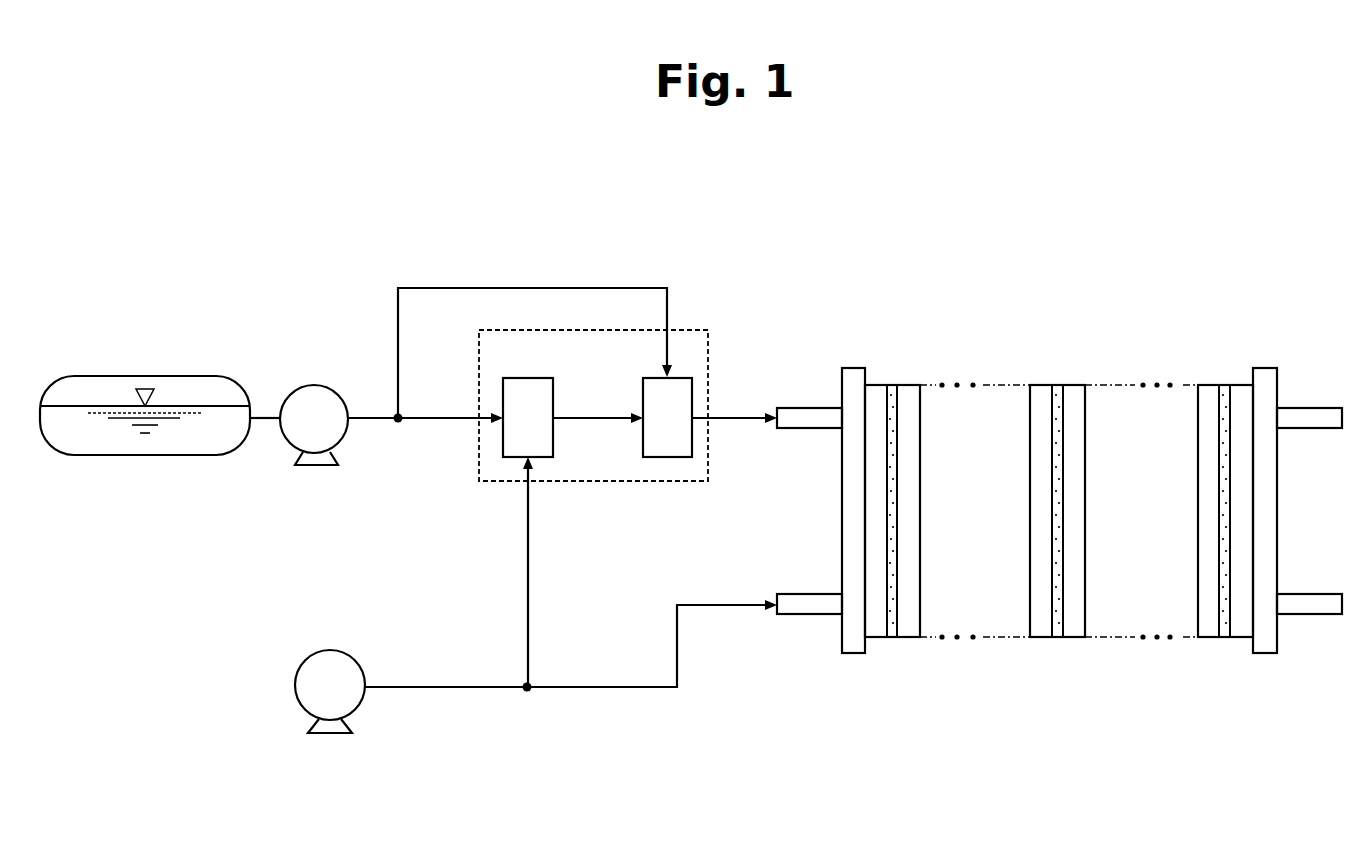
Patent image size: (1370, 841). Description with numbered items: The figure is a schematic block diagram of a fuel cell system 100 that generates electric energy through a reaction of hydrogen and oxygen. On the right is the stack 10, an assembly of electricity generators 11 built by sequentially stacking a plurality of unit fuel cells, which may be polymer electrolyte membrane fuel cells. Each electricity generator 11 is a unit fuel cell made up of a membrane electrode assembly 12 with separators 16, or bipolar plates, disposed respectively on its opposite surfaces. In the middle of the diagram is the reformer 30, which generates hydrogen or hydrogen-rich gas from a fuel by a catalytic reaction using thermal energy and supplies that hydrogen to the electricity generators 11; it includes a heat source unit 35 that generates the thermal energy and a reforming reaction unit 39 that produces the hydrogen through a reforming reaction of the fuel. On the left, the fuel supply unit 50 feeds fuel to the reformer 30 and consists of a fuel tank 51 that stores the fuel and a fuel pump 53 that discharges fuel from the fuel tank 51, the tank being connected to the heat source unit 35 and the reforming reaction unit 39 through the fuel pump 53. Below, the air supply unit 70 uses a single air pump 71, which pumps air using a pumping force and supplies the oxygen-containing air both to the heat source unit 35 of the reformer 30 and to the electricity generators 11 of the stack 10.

The fuel cell system 100 is at (731, 193).
The stack 10 is at (1073, 348).
The electricity generator 11 is at (1123, 742).
The membrane electrode assembly 12 is at (1058, 637).
The separator 16 is at (1047, 637).
The reformer 30 is at (684, 330).
The heat source unit 35 is at (536, 378).
The reforming reaction unit 39 is at (675, 378).
The fuel supply unit 50 is at (113, 332).
The fuel tank 51 is at (91, 457).
The fuel pump 53 is at (322, 384).
The air supply unit 70 is at (382, 715).
The air pump 71 is at (336, 651).